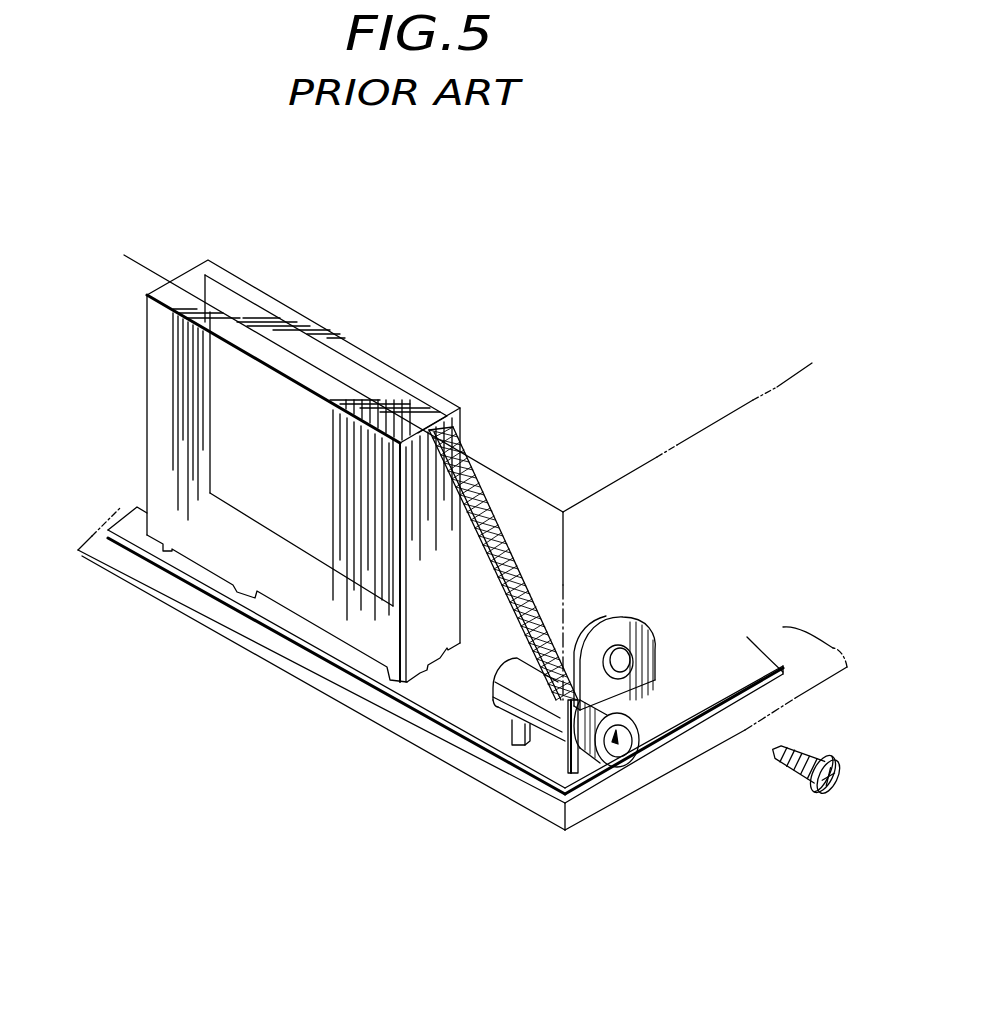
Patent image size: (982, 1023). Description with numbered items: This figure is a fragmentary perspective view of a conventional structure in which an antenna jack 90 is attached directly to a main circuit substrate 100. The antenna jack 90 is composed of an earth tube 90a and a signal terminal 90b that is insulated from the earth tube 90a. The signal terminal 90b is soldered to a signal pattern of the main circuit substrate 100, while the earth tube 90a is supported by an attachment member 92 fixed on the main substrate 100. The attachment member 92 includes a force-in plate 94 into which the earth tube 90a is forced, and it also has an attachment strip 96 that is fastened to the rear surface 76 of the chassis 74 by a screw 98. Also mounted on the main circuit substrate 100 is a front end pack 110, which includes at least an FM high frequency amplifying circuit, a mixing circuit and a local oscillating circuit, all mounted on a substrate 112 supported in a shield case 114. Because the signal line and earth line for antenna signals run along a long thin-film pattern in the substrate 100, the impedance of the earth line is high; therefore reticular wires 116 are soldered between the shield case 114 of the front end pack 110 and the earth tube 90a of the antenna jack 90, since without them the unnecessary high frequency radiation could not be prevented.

The chassis 74 is at (780, 388).
The rear surface 76 is at (690, 566).
The antenna jack 90 is at (623, 750).
The earth tube 90a is at (547, 737).
The signal terminal 90b is at (510, 733).
The attachment member 92 is at (722, 671).
The force-in plate 94 is at (583, 767).
The attachment strip 96 is at (650, 645).
The screw 98 is at (838, 757).
The main circuit substrate 100 is at (440, 700).
The front end pack 110 is at (417, 366).
The substrate 112 is at (263, 296).
The shield case 114 is at (308, 602).
The reticular wires 116 is at (512, 552).